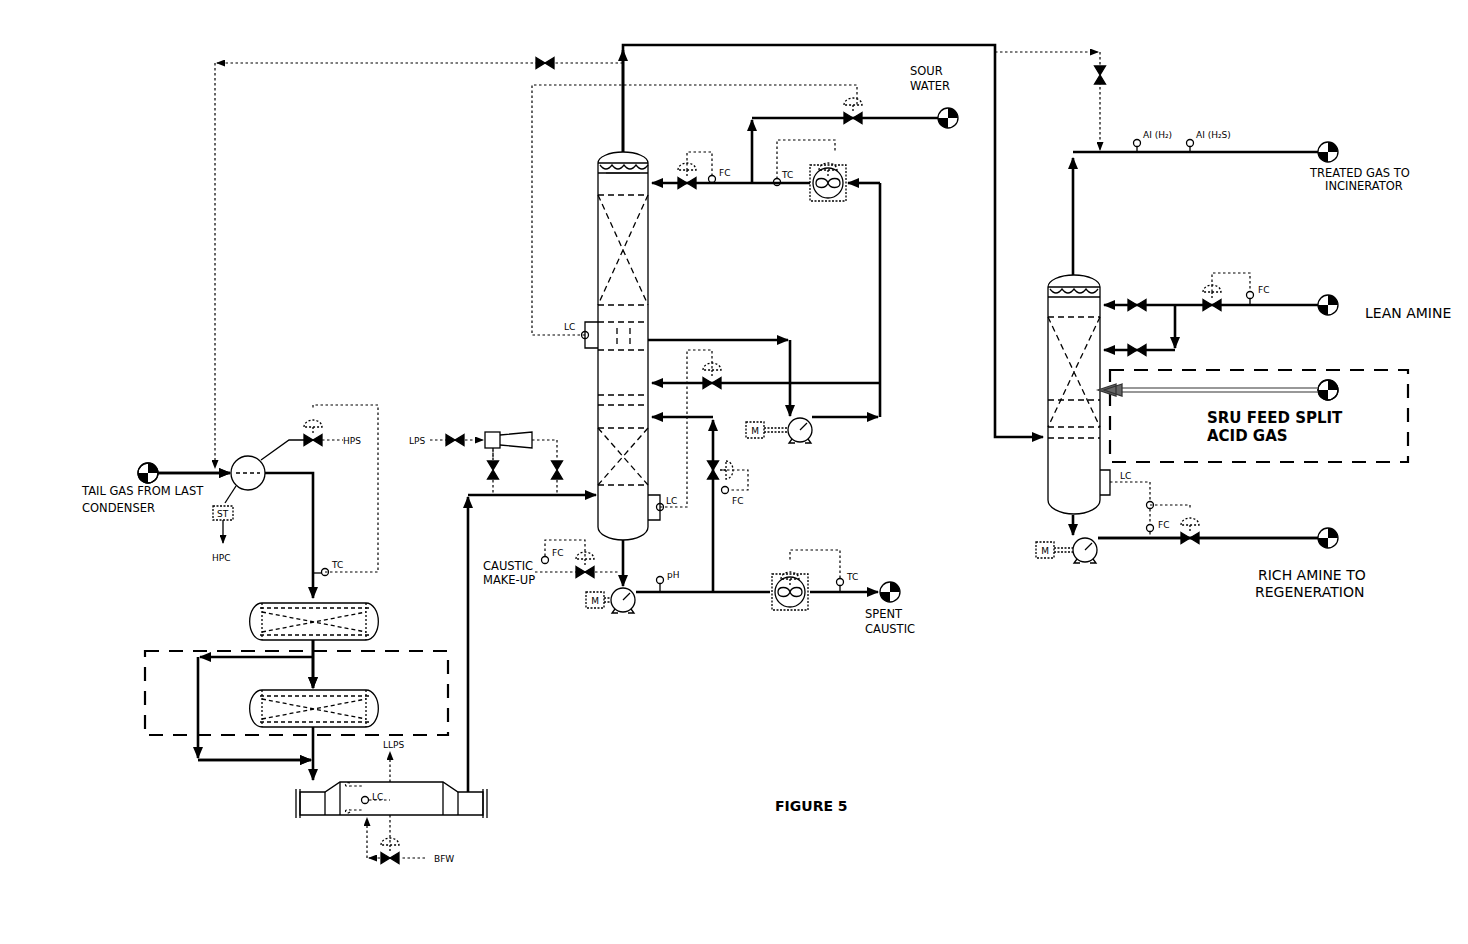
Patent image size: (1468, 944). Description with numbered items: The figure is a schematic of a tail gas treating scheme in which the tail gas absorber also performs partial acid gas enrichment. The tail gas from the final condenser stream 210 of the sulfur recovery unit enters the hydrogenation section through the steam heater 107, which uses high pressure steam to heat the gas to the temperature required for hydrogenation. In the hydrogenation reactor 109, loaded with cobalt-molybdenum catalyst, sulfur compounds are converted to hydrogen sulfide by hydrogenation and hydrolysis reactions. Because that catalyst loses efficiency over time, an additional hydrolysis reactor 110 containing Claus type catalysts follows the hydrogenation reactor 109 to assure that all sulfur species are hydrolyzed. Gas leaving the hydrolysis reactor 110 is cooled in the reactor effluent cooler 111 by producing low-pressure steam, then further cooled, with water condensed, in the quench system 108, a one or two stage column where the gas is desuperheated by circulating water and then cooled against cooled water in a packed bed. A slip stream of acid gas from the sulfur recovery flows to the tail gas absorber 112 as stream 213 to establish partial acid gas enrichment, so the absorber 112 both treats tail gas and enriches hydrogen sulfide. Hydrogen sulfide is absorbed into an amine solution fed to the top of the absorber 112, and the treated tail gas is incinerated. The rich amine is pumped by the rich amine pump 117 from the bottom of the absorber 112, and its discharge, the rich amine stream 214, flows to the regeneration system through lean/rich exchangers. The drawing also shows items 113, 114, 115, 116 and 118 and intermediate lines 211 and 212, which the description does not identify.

The steam heater 107 is at (256, 454).
The quench system 108 is at (604, 155).
The hydrogenation reactor 109 is at (282, 603).
The hydrolysis reactor 110 is at (270, 695).
The reactor effluent cooler 111 is at (453, 784).
The tail gas absorber 112 is at (1058, 273).
The spent caustic cooler 113 is at (776, 574).
The caustic circulation pump 114 is at (626, 614).
The caustic recycle cooler 115 is at (848, 177).
The caustic recycle pump 116 is at (813, 440).
The rich amine pump 117 is at (1088, 560).
The steam ejector 118 is at (534, 425).
The tail gas from the final condenser stream 210 is at (206, 466).
The reactor effluent line to second reactor 211 is at (318, 675).
The reactor bypass line 212 is at (318, 752).
The acid gas slip stream 213 is at (1190, 393).
The rich amine stream 214 is at (1226, 541).